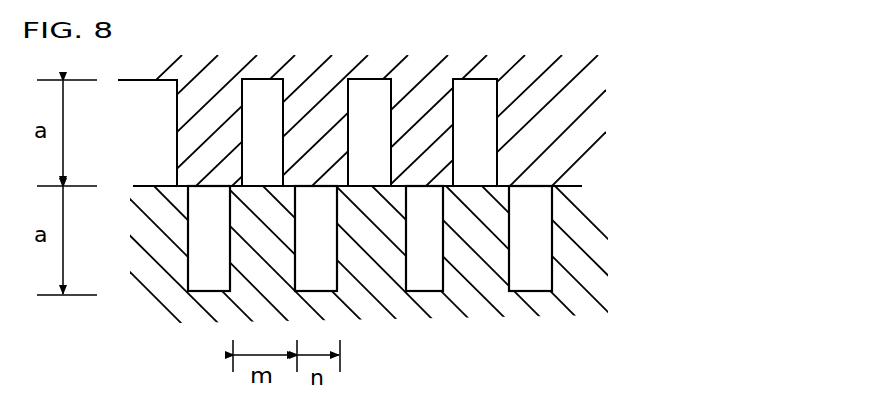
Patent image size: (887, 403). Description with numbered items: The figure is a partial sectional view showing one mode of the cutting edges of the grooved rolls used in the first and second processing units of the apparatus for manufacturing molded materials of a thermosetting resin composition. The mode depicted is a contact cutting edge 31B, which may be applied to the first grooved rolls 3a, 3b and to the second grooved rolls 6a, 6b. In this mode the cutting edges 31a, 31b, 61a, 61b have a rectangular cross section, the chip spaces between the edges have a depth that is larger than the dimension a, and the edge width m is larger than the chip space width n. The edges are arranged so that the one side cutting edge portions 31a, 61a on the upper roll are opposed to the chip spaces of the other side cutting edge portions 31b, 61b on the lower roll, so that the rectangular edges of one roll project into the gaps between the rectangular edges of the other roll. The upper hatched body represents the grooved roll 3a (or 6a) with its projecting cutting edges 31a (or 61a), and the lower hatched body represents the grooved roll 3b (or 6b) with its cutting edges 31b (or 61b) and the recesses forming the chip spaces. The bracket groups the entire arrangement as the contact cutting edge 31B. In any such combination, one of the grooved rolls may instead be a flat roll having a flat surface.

The first grooved roll 3a is at (396, 102).
The second grooved roll 6a is at (530, 43).
The cutting edge 31a is at (505, 132).
The cutting edge 61a is at (445, 150).
The first grooved roll 3b is at (374, 261).
The second grooved roll 6b is at (487, 302).
The cutting edge 31b is at (452, 237).
The cutting edge 61b is at (497, 227).
The contact cutting edge 31B is at (437, 177).